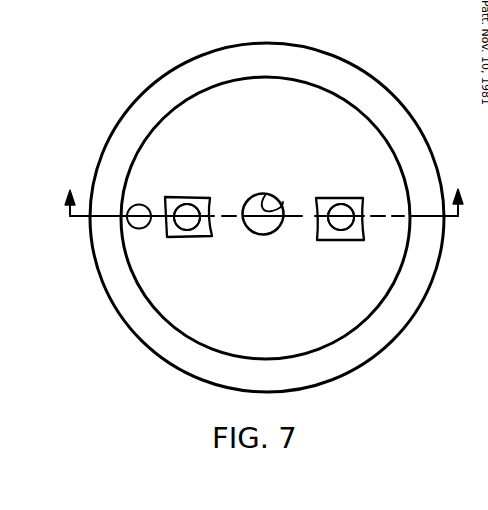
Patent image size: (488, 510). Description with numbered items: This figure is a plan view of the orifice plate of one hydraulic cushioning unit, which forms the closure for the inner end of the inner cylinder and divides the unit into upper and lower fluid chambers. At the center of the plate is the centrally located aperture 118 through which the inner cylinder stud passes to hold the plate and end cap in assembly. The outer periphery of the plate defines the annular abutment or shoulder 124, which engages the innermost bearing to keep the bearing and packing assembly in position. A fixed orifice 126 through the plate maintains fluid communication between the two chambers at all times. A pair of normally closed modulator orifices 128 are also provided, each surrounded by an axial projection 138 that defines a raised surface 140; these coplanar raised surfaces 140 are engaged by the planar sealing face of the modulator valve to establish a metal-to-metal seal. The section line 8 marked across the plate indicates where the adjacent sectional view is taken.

The section line 8- 8 is at (261, 208).
The centrally located aperture 118 is at (266, 194).
The annular abutment or shoulder 124 is at (118, 132).
The fixed orifice 126 is at (127, 220).
The modulator orifice 128 is at (188, 229).
The axial projection 138 is at (212, 214).
The raised surface 140 is at (190, 204).